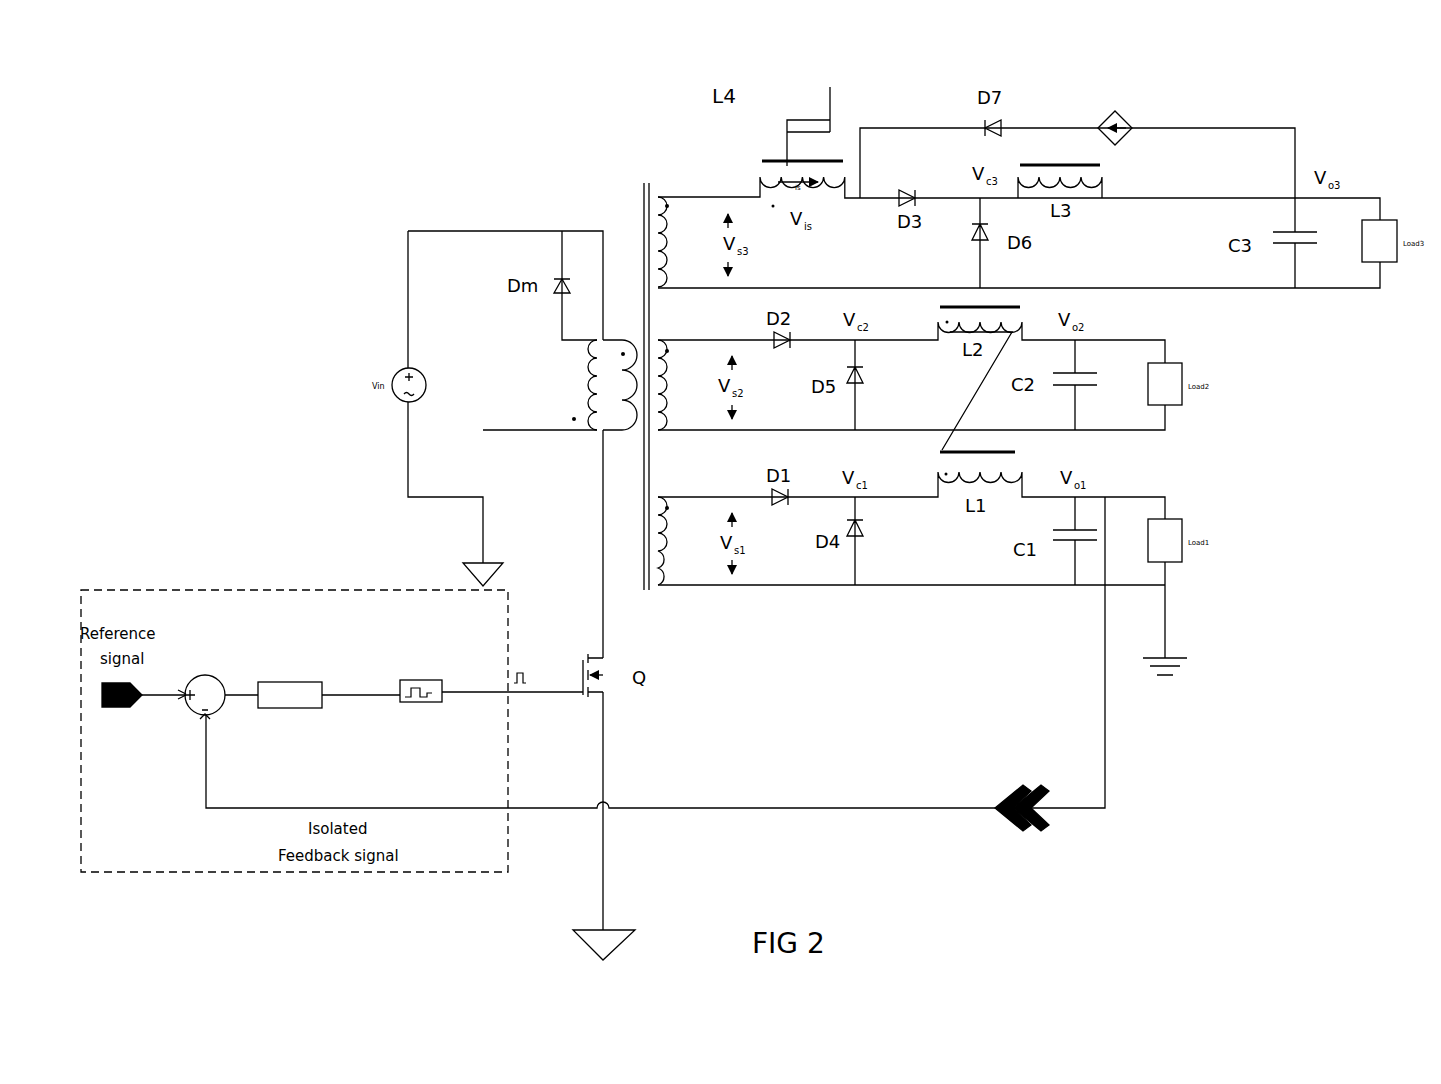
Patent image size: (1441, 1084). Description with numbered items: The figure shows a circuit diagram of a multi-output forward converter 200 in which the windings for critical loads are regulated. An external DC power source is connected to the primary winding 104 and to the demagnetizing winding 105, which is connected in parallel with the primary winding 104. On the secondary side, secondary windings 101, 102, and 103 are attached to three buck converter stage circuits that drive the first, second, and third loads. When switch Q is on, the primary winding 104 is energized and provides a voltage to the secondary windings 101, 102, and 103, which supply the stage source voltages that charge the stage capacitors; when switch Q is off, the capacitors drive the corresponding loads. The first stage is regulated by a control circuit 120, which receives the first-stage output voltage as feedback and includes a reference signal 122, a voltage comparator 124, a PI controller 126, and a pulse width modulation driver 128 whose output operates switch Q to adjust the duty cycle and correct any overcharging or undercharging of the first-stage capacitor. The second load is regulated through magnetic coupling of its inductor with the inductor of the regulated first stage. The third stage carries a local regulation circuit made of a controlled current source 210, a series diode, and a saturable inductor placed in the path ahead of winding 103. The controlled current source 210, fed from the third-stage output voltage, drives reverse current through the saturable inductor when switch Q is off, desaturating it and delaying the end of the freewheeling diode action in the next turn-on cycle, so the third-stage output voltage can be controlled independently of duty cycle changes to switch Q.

The forward converter 200 is at (300, 108).
The secondary winding 101 is at (665, 540).
The secondary winding 102 is at (677, 371).
The secondary winding 103 is at (663, 230).
The primary winding 104 is at (628, 383).
The demagnetizing winding 105 is at (592, 373).
The control circuit 120 is at (180, 590).
The reference signal 122 is at (132, 707).
The voltage comparator 124 is at (210, 677).
The PI controller 126 is at (298, 682).
The pulse width modulation (PWM) driver 128 is at (425, 680).
The controlled current source 210 is at (1115, 128).